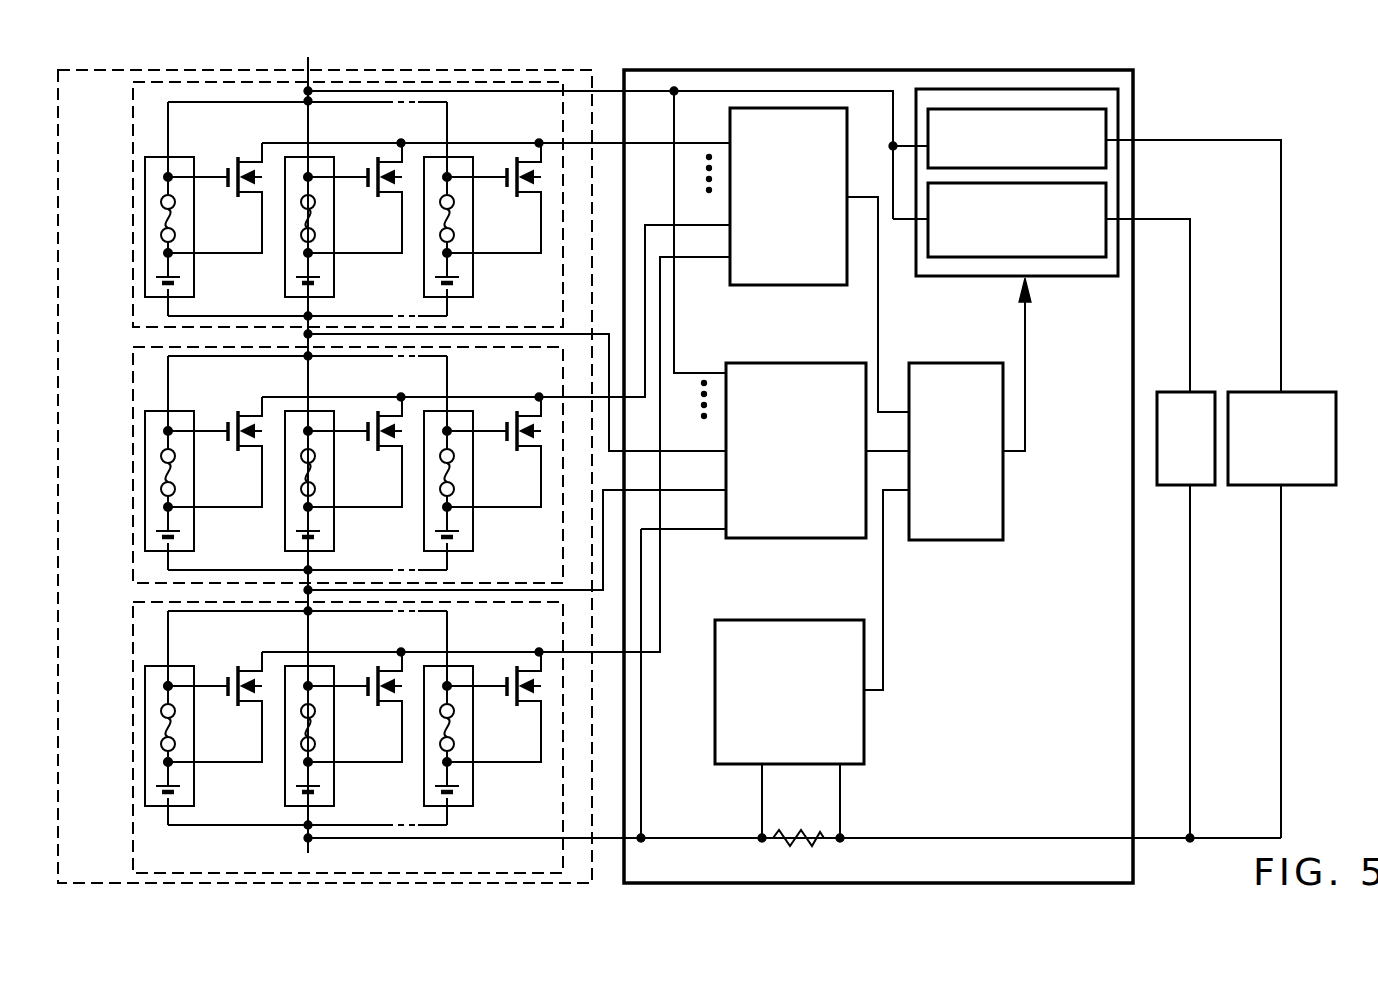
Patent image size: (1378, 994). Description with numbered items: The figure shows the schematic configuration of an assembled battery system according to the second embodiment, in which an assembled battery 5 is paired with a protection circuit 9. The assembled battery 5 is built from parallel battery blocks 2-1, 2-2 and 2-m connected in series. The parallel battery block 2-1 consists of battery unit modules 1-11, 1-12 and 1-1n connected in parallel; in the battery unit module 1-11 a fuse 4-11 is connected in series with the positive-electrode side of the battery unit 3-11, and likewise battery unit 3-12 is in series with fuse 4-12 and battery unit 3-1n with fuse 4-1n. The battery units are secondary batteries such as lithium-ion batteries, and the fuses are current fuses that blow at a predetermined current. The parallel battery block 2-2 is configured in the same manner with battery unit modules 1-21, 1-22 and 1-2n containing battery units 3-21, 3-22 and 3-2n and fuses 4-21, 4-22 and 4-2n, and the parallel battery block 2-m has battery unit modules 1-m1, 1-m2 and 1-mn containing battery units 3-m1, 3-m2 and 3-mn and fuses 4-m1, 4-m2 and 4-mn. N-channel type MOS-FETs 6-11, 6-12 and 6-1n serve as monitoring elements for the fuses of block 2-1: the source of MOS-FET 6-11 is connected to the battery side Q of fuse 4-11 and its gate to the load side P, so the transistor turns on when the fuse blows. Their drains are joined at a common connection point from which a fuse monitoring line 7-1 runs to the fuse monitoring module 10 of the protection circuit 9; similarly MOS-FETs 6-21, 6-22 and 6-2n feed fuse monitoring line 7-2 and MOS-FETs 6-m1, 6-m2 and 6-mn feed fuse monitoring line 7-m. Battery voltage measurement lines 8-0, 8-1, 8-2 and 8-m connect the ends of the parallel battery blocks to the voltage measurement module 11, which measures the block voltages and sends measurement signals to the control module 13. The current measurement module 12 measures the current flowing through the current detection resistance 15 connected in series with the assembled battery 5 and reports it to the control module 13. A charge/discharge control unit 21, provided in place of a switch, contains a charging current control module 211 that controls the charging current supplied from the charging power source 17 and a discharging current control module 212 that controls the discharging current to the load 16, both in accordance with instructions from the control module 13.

The assembled battery 5 is at (572, 70).
The protection circuit 9 is at (1133, 865).
The parallel battery block 2-m is at (133, 292).
The parallel battery block 2-2 is at (133, 537).
The parallel battery block 2-1 is at (133, 843).
The battery unit module 1-m1 is at (206, 209).
The battery unit module 1-m2 is at (346, 209).
The battery unit module 1-mn is at (485, 209).
The battery unit module 1-21 is at (202, 463).
The battery unit module 1-22 is at (342, 463).
The battery unit module 1-2n is at (481, 463).
The battery unit module 1-11 is at (202, 718).
The battery unit module 1-12 is at (342, 718).
The battery unit module 1-1n is at (481, 718).
The battery unit 3-m1 is at (211, 273).
The battery unit 3-m2 is at (351, 273).
The battery unit 3-mn is at (490, 273).
The battery unit 3-21 is at (208, 527).
The battery unit 3-22 is at (348, 527).
The battery unit 3-2n is at (487, 527).
The battery unit 3-11 is at (208, 782).
The battery unit 3-12 is at (348, 782).
The battery unit 3-1n is at (487, 782).
The fuse 4-m1 is at (210, 218).
The fuse 4-m2 is at (350, 218).
The fuse 4-mn is at (489, 218).
The fuse 4-21 is at (207, 472).
The fuse 4-22 is at (347, 472).
The fuse 4-2n is at (486, 472).
The fuse 4-11 is at (207, 727).
The fuse 4-12 is at (347, 727).
The fuse 4-1n is at (486, 727).
The n-channel type MOS-FET 6-m1 is at (216, 183).
The n-channel type MOS-FET 6-m2 is at (356, 183).
The n-channel type MOS-FET 6-mn is at (495, 183).
The n-channel type MOS-FET 6-21 is at (215, 437).
The n-channel type MOS-FET 6-22 is at (355, 437).
The n-channel type MOS-FET 6-2n is at (494, 437).
The n-channel type MOS-FET 6-11 is at (215, 692).
The n-channel type MOS-FET 6-12 is at (355, 692).
The n-channel type MOS-FET 6-1n is at (494, 692).
The fuse monitoring line 7-m is at (496, 132).
The fuse monitoring line 7-2 is at (496, 301).
The fuse monitoring line 7-1 is at (496, 444).
The battery voltage measurement line 8-m is at (700, 359).
The battery voltage measurement line 8-2 is at (667, 438).
The battery voltage measurement line 8-1 is at (664, 476).
The battery voltage measurement line 8-0 is at (683, 516).
The fuse monitoring module 10 is at (760, 285).
The voltage measurement module 11 is at (820, 363).
The current measurement module 12 is at (864, 733).
The control module 13 is at (964, 540).
The current detection resistance 15 is at (803, 832).
The load 16 is at (1208, 392).
The charging power source 17 is at (1312, 392).
The charge/discharge control unit 21 is at (1098, 215).
The charging current control module 211 is at (1050, 109).
The discharging current control module 212 is at (957, 257).
The load side P is at (166, 687).
The battery side Q is at (166, 764).